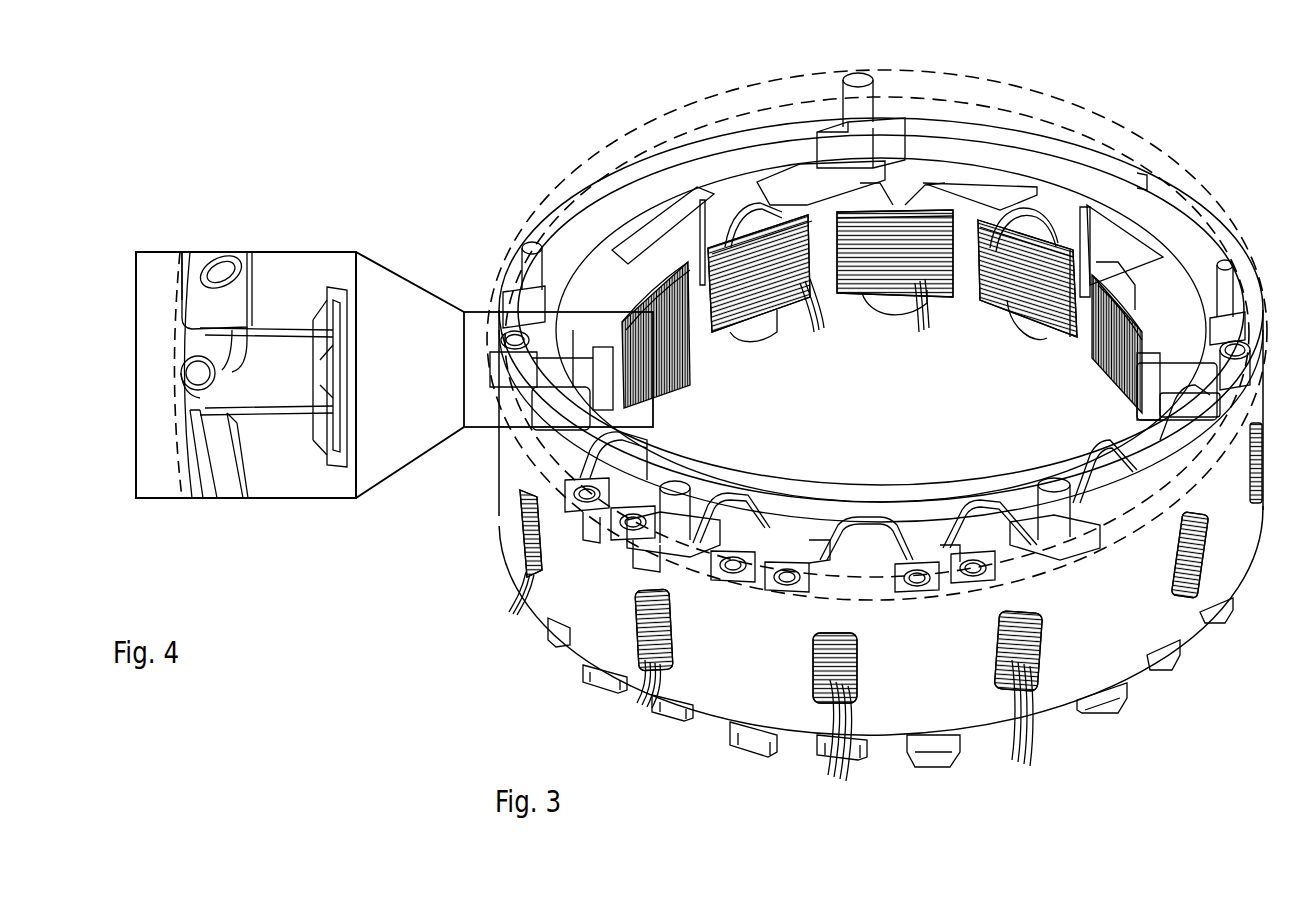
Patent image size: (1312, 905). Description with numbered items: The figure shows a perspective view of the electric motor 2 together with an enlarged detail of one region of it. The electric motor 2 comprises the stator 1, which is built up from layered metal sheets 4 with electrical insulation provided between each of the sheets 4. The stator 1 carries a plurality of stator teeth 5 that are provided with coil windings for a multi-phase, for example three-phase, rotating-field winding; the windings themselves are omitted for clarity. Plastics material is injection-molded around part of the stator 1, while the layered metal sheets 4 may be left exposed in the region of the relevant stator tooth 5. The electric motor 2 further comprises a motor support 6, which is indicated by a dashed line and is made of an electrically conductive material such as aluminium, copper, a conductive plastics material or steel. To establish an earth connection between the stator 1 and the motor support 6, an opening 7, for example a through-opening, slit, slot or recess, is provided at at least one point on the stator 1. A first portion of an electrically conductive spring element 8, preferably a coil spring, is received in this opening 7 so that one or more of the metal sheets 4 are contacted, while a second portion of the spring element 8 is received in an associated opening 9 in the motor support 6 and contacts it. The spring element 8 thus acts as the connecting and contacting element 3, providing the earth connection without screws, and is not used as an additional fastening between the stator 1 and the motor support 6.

In FIG. 3, the stator 1 is at (893, 715).
In FIG. 4, the stator 1 is at (224, 262).
In FIG. 3, the electric motor 2 is at (1216, 166).
In FIG. 4, the electric motor 2 is at (293, 437).
In FIG. 4, the connecting and contacting element 3 is at (205, 395).
In FIG. 3, the layered metal sheets 4 is at (885, 543).
In FIG. 3, the stator teeth 5 is at (732, 192).
In FIG. 4, the stator teeth 5 is at (282, 362).
In FIG. 3, the motor support 6 is at (1045, 101).
In FIG. 4, the motor support 6 is at (178, 296).
In FIG. 4, the opening 7 is at (226, 373).
In FIG. 4, the spring element 8 is at (232, 410).
In FIG. 3, the opening 9 is at (528, 303).